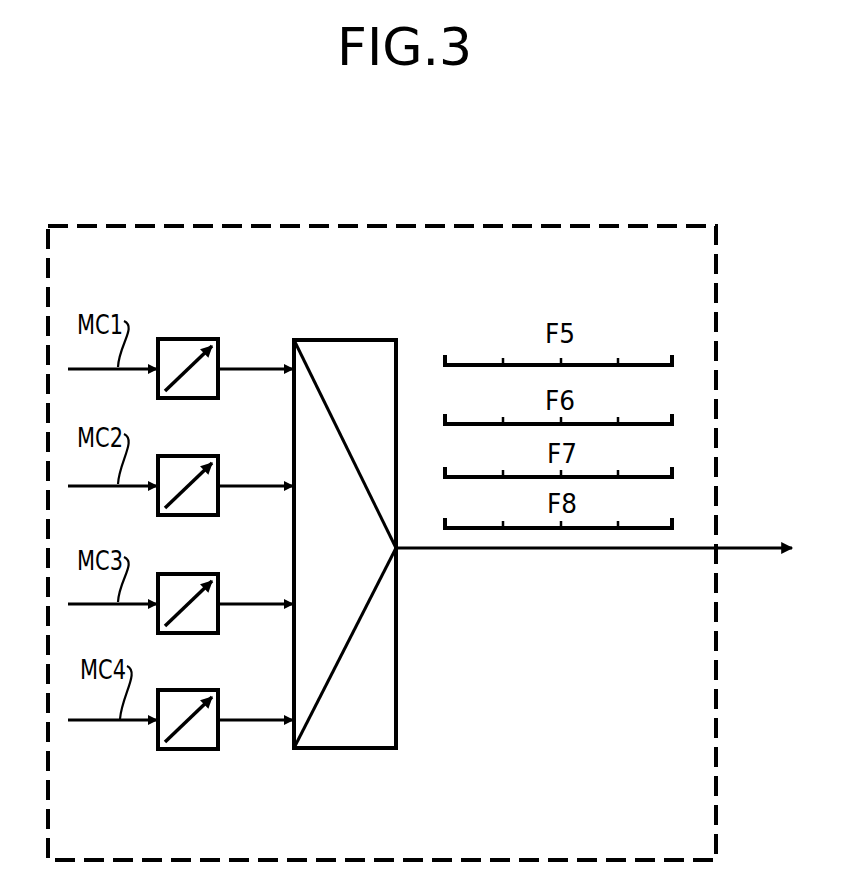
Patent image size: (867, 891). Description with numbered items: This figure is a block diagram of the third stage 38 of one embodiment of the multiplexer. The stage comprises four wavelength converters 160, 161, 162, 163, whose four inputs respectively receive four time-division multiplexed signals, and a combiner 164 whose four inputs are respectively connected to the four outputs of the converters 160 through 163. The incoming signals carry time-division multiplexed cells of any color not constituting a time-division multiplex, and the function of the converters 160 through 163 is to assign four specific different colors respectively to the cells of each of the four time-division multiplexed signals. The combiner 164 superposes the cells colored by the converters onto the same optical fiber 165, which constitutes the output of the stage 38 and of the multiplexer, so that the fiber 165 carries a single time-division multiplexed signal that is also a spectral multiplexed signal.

The third stage 38 is at (676, 225).
The wavelength converter 160 is at (184, 347).
The wavelength converter 161 is at (184, 464).
The wavelength converter 162 is at (184, 582).
The wavelength converter 163 is at (186, 698).
The combiner 164 is at (383, 352).
The optical fiber 165 is at (745, 548).